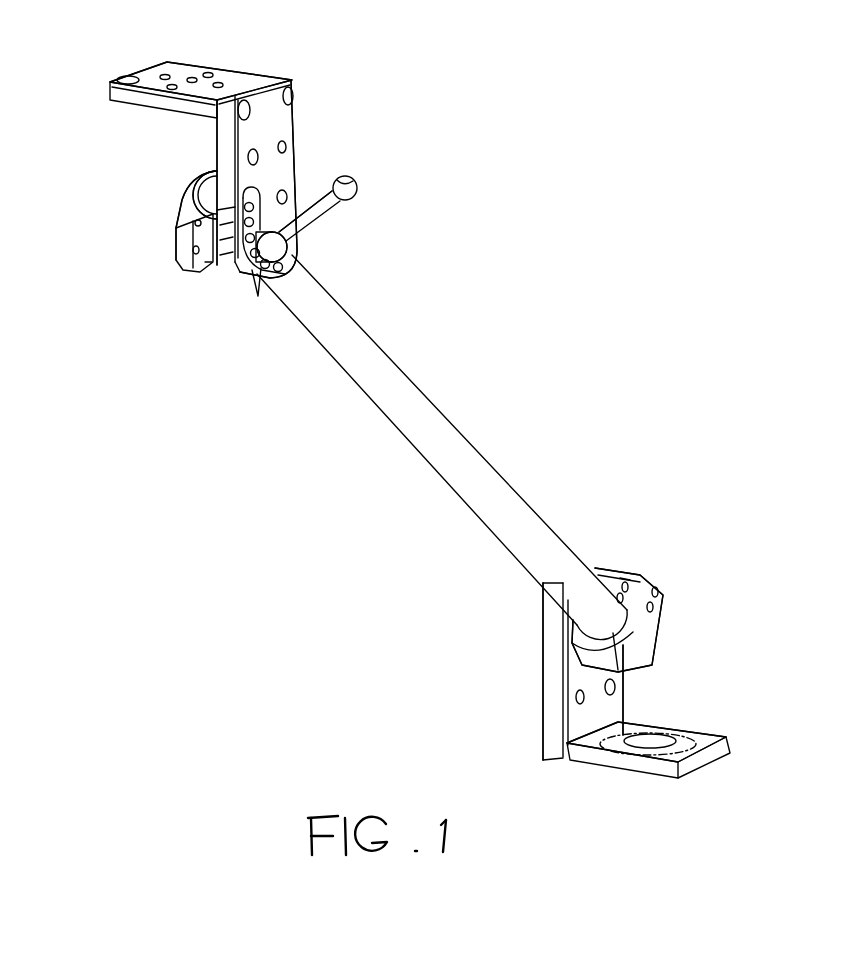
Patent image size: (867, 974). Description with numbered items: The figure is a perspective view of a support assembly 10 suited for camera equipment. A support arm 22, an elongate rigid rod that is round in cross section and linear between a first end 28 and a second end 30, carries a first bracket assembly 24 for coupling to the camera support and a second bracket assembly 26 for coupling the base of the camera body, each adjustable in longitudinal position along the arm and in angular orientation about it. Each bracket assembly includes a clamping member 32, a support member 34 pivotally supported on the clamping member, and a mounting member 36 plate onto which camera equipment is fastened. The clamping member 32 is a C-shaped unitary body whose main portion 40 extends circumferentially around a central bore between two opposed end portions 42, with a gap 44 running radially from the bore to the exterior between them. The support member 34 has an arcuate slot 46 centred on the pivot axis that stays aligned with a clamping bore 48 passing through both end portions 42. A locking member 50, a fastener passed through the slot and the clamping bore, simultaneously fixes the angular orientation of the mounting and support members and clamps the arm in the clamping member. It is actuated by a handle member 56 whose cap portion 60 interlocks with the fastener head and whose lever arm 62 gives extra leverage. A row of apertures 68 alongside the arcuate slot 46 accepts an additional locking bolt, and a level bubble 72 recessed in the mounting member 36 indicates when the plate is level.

The support assembly 10 is at (553, 113).
The support arm 22 is at (418, 378).
The first bracket assembly 24 is at (493, 716).
The second bracket assembly 26 is at (107, 213).
The first end 28 is at (520, 637).
The second end 30 is at (188, 330).
The clamping member 32 is at (188, 192).
The support member 34 is at (290, 122).
The mounting member 36 is at (228, 77).
The main portion 40 is at (623, 653).
The end portions 42 is at (187, 257).
The gap 44 is at (205, 267).
The arcuate slot 46 is at (255, 195).
The clamping bore 48 is at (178, 224).
The locking member 50 is at (298, 246).
The handle member 56 is at (324, 206).
The cap portion 60 is at (288, 253).
The lever arm 62 is at (282, 240).
The apertures 68 is at (269, 292).
The level bubble 72 is at (133, 76).